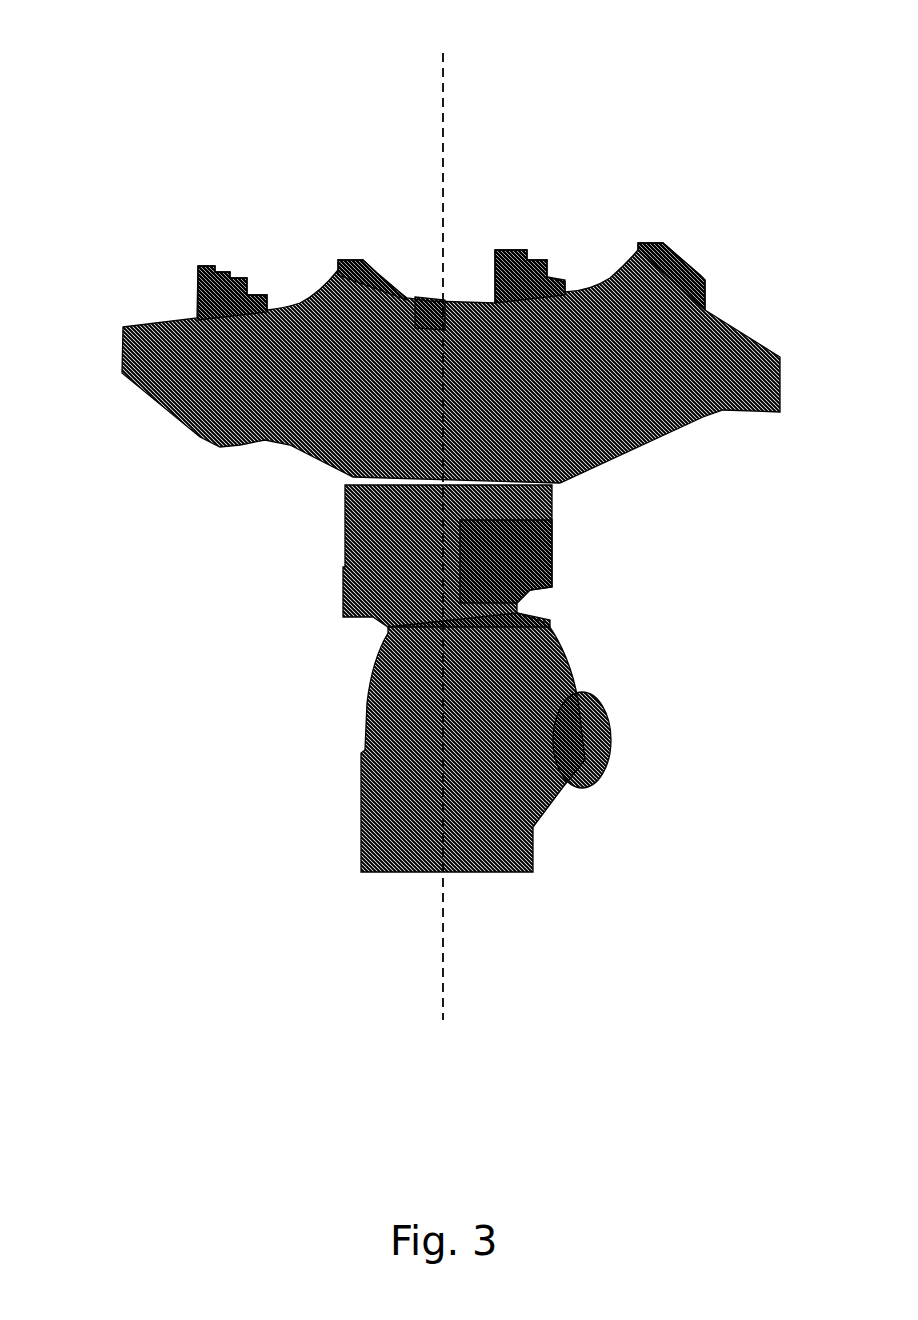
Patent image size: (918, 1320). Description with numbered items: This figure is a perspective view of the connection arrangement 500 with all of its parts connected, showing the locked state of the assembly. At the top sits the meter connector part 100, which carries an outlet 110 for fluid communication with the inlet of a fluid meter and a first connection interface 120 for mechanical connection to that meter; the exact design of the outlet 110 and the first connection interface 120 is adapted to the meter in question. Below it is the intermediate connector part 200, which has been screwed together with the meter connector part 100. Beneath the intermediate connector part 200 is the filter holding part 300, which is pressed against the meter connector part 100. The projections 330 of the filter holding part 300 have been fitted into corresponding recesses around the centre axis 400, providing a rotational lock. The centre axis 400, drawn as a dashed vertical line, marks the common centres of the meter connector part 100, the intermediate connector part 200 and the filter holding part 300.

The connection arrangement 500 is at (108, 41).
The meter connector part 100 is at (410, 325).
The outlet 110 is at (429, 312).
The first connection interface 120 is at (367, 293).
The intermediate connector part 200 is at (432, 556).
The filter holding part 300 is at (314, 762).
The projections 330 is at (512, 550).
The centre axis 400 is at (443, 213).